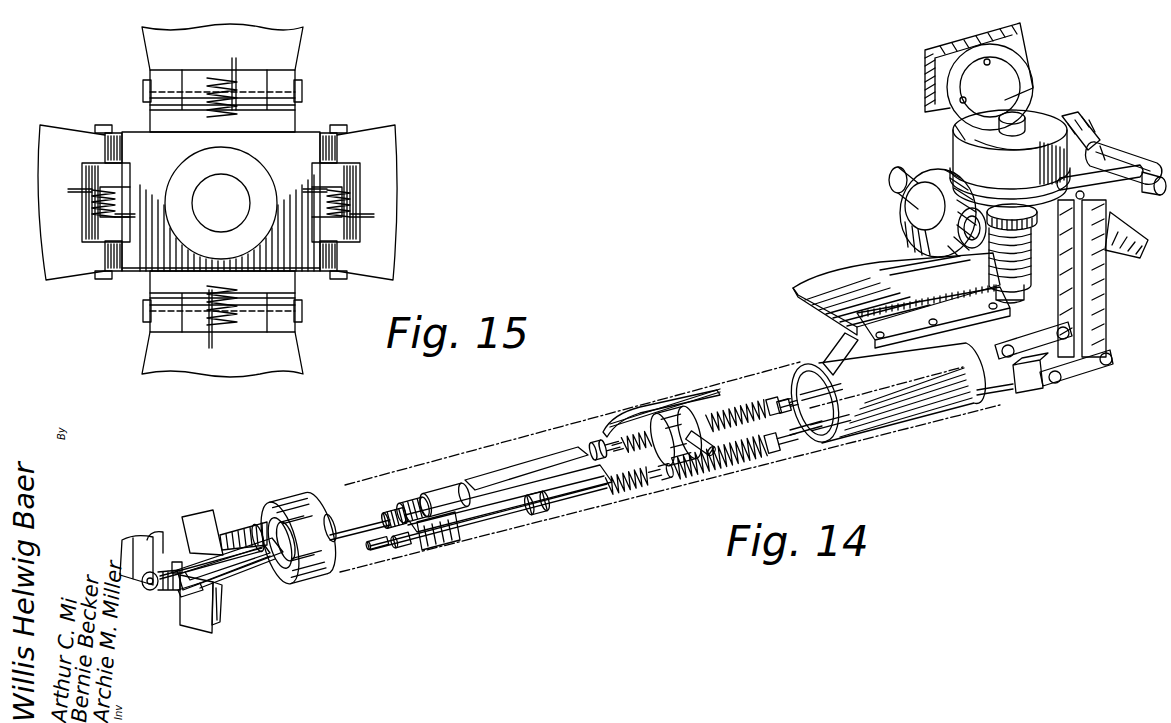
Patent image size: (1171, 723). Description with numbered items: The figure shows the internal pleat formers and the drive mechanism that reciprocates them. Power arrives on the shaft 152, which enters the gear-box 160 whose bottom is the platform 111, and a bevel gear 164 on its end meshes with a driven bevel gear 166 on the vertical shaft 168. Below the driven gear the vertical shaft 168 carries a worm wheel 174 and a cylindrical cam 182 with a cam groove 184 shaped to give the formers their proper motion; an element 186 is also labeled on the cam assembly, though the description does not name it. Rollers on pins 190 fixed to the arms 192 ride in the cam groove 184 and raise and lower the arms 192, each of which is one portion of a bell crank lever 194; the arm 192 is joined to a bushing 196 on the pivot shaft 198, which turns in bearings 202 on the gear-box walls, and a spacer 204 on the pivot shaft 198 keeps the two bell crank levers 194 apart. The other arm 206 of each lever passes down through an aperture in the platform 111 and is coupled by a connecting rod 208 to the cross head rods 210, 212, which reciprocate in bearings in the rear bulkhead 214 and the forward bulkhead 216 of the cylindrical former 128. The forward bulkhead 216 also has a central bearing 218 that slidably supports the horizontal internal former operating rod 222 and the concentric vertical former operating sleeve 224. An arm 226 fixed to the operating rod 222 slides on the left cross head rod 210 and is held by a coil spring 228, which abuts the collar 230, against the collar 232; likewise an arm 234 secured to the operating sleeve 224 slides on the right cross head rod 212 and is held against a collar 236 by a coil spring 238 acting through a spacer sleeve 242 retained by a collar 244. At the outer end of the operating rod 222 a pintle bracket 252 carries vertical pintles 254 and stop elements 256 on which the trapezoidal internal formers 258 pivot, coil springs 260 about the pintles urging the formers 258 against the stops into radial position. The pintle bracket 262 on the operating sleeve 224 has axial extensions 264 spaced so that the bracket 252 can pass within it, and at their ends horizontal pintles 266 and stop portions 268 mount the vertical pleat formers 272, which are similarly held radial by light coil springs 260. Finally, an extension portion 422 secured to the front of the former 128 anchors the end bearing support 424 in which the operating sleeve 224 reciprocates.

In FIG. 14, the platform 111 is at (897, 264).
In FIG. 14, the cylindrical former 128 is at (908, 402).
In FIG. 14, the shaft 152 is at (890, 184).
In FIG. 14, the gear-box 160 is at (935, 80).
In FIG. 14, the bevel gear 164 is at (928, 232).
In FIG. 14, the driven bevel gear 166 is at (973, 211).
In FIG. 14, the vertical shaft 168 is at (1040, 126).
In FIG. 14, the worm wheel 174 is at (1018, 262).
In FIG. 14, the cylindrical cam 182 is at (955, 148).
In FIG. 14, the cam groove 184 is at (968, 170).
In FIG. 14, the worm gear 186 is at (1002, 210).
In FIG. 14, the pin 190 is at (1088, 198).
In FIG. 14, the arm 192 is at (955, 128).
In FIG. 14, the bell crank lever 194 is at (1016, 116).
In FIG. 14, the bushing 196 is at (1125, 152).
In FIG. 14, the pivot shaft 198 is at (1162, 180).
In FIG. 14, the bearing 202 is at (1000, 60).
In FIG. 14, the spacer 204 is at (1084, 130).
In FIG. 14, the arm 206 is at (1106, 300).
In FIG. 14, the connecting rod 208 is at (1072, 362).
In FIG. 14, the cross head rod 210 is at (1000, 388).
In FIG. 14, the cross head rod 212 is at (784, 402).
In FIG. 14, the rear bulkhead 214 is at (860, 445).
In FIG. 14, the forward bulkhead 216 is at (405, 546).
In FIG. 14, the central bearing 218 is at (376, 552).
In FIG. 15, the internal former operating rod 222 is at (238, 186).
In FIG. 14, the internal former operating rod 222 is at (356, 540).
In FIG. 14, the internal former operating sleeve 224 is at (398, 516).
In FIG. 14, the arm 226 is at (596, 492).
In FIG. 14, the coil spring 228 is at (670, 478).
In FIG. 14, the collar 230 is at (768, 458).
In FIG. 14, the collar 232 is at (537, 510).
In FIG. 14, the arm 234 is at (437, 492).
In FIG. 14, the collar 236 is at (412, 497).
In FIG. 14, the coil spring 238 is at (596, 445).
In FIG. 14, the spacer sleeve 242 is at (500, 476).
In FIG. 14, the collar 244 is at (756, 400).
In FIG. 15, the pintle bracket 252 is at (152, 143).
In FIG. 14, the pintle bracket 252 is at (150, 592).
In FIG. 15, the pintle 254 is at (332, 132).
In FIG. 14, the pintle 254 is at (175, 562).
In FIG. 15, the stop element 256 is at (100, 128).
In FIG. 14, the stop element 256 is at (162, 558).
In FIG. 15, the internal former 258 is at (376, 222).
In FIG. 14, the internal former 258 is at (130, 565).
In FIG. 15, the coil spring 260 is at (226, 84).
In FIG. 15, the pintle bracket 262 is at (165, 280).
In FIG. 14, the pintle bracket 262 is at (258, 530).
In FIG. 14, the axial extension 264 is at (232, 538).
In FIG. 15, the horizontal pintle 266 is at (146, 91).
In FIG. 14, the horizontal pintle 266 is at (218, 578).
In FIG. 14, the stop portion 268 is at (240, 566).
In FIG. 15, the vertical pleat former 272 is at (290, 50).
In FIG. 14, the vertical pleat former 272 is at (196, 522).
In FIG. 14, the extension portion 422 is at (310, 568).
In FIG. 14, the end bearing support 424 is at (296, 505).